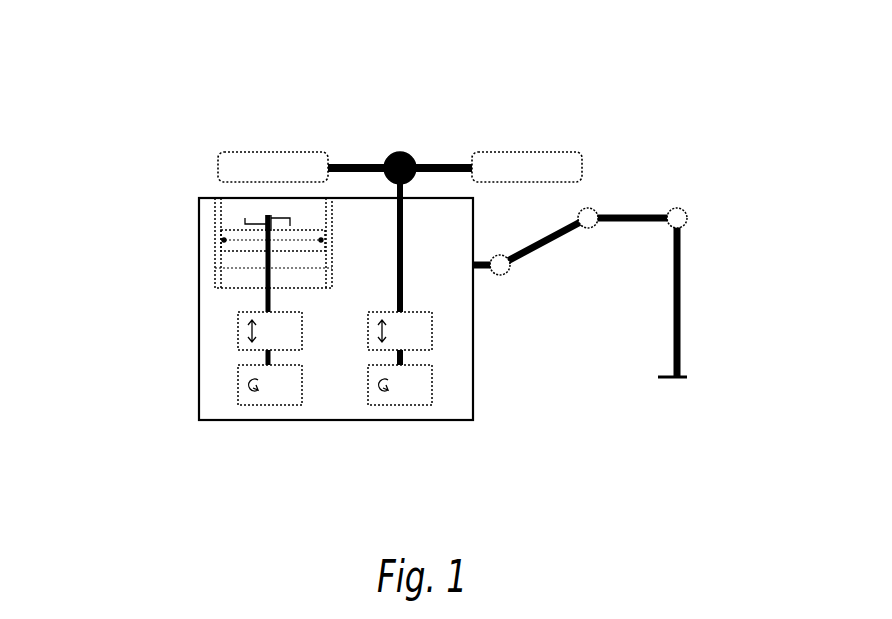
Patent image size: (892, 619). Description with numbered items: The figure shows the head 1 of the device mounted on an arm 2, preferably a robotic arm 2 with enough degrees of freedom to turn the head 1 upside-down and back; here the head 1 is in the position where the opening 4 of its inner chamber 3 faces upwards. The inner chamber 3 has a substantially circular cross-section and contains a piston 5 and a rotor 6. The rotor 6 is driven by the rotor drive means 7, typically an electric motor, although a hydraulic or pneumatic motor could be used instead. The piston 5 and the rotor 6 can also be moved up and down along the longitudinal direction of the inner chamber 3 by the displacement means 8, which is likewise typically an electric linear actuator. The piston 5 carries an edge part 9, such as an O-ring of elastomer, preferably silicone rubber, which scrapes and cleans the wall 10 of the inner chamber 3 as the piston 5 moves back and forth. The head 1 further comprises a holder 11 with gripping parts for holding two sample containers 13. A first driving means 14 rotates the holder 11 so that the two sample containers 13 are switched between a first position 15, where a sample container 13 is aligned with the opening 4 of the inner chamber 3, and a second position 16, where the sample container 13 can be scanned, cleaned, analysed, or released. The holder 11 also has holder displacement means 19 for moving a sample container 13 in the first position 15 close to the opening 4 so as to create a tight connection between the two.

The head 1 is at (455, 402).
The arm 2 is at (685, 243).
The inner chamber 3 is at (235, 268).
The opening 4 is at (233, 197).
The piston 5 is at (240, 238).
The rotor 6 is at (282, 213).
The rotor drive means 7 is at (255, 400).
The displacement means 8 is at (240, 332).
The edge part 9 is at (200, 233).
The wall 10 is at (215, 282).
The holder 11 is at (420, 139).
The sample container 13 is at (420, 94).
The first driving means 14 is at (392, 400).
The first position 15 is at (308, 133).
The second position 16 is at (568, 142).
The holder displacement means 19 is at (425, 330).